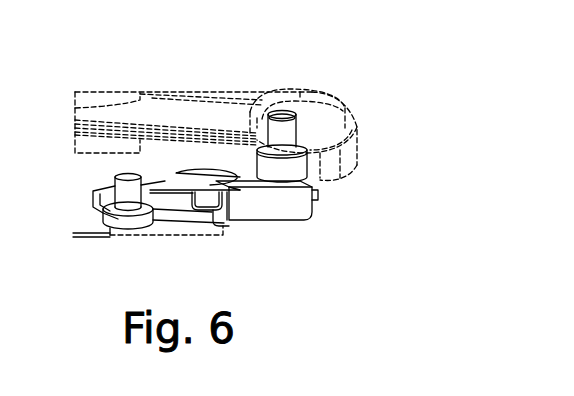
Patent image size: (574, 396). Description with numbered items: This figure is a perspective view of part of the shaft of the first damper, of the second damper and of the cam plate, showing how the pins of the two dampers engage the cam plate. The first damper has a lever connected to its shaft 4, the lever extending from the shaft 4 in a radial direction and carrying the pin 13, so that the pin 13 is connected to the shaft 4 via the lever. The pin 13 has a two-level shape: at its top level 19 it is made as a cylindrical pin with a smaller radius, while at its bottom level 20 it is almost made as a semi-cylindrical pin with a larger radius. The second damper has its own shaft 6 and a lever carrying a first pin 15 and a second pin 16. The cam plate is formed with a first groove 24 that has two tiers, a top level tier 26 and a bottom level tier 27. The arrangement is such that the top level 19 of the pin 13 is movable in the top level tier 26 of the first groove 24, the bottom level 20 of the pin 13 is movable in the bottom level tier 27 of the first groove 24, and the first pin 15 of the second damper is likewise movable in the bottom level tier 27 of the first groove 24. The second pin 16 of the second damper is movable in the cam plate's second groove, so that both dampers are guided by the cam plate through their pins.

The shaft 4 is at (188, 227).
The shaft 6 is at (164, 215).
The pin 13 is at (283, 110).
The first pin 15 is at (252, 163).
The second pin 16 is at (127, 174).
The top level 19 is at (288, 128).
The bottom level 20 is at (302, 165).
The first groove 24 is at (163, 112).
The top level tier 26 is at (318, 112).
The bottom level tier 27 is at (345, 146).